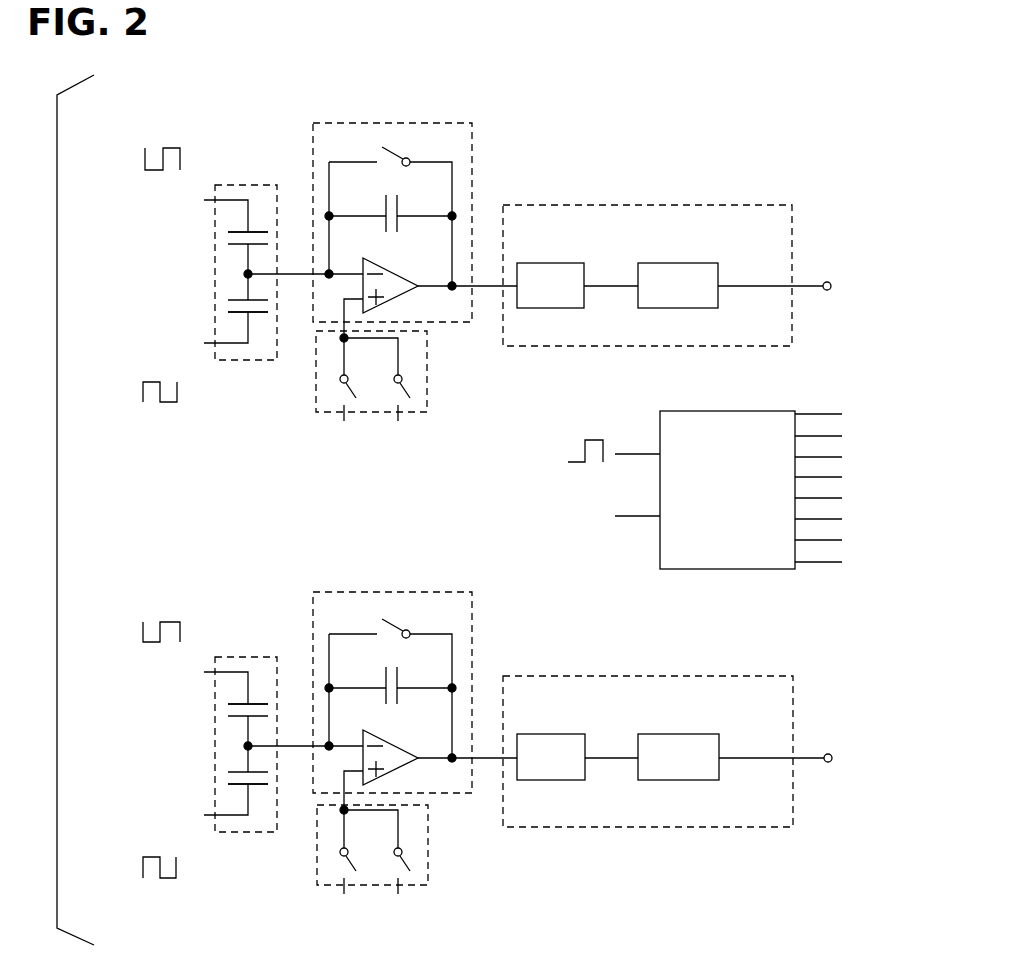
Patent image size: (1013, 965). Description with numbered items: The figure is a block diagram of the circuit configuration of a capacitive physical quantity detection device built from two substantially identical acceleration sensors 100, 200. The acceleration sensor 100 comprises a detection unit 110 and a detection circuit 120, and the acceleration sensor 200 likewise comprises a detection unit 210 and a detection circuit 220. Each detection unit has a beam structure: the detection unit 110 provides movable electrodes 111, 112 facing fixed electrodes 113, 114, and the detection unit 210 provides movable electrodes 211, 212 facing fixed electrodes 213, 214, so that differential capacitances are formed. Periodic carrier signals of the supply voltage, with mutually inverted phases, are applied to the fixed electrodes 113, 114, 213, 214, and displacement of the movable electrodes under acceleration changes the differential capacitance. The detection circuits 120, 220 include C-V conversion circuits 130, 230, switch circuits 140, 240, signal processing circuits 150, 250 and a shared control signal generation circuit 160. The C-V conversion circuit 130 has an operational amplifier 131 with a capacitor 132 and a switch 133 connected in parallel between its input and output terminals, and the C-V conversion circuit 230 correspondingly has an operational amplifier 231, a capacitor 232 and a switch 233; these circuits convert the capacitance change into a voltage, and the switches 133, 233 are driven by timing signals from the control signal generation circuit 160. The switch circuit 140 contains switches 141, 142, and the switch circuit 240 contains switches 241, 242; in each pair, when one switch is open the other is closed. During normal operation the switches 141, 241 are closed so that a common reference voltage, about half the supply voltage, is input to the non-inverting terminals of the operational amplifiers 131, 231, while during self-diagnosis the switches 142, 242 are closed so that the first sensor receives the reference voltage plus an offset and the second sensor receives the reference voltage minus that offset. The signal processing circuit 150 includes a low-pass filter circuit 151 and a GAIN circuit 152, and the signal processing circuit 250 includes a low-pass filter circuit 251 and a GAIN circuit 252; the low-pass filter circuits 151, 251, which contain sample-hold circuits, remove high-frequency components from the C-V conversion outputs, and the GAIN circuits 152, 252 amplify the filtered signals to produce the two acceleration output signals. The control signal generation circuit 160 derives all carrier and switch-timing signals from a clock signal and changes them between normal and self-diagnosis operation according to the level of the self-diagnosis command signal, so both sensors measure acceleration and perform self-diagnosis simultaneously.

The acceleration sensor 100 is at (821, 157).
The detection unit 110 is at (255, 185).
The movable electrode 111 is at (228, 245).
The movable electrode 112 is at (227, 300).
The fixed electrode 113 is at (227, 232).
The fixed electrode 114 is at (228, 312).
The detection circuit 120 is at (504, 162).
The C-V conversion circuit 130 is at (363, 123).
The operational amplifier 131 is at (398, 268).
The capacitor 132 is at (396, 207).
The switch 133 is at (398, 152).
The switch circuit 140 is at (430, 362).
The switch 141 is at (408, 392).
The switch 142 is at (346, 391).
The signal processing circuit 150 is at (710, 205).
The low-pass filter circuit 151 is at (565, 263).
The GAIN circuit 152 is at (700, 263).
The control signal generation circuit 160 is at (735, 411).
The acceleration sensor 200 is at (493, 742).
The detection unit 210 is at (194, 708).
The movable electrode 211 is at (209, 720).
The movable electrode 212 is at (189, 762).
The fixed electrode 213 is at (189, 695).
The fixed electrode 214 is at (209, 787).
The detection circuit 220 is at (394, 742).
The C-V conversion circuit 230 is at (392, 668).
The operational amplifier 231 is at (398, 757).
The capacitor 232 is at (390, 674).
The switch 233 is at (421, 619).
The switch circuit 240 is at (368, 881).
The switch 241 is at (444, 861).
The switch 242 is at (299, 861).
The signal processing circuit 250 is at (657, 716).
The low-pass filter circuit 251 is at (566, 736).
The GAIN circuit 252 is at (692, 736).